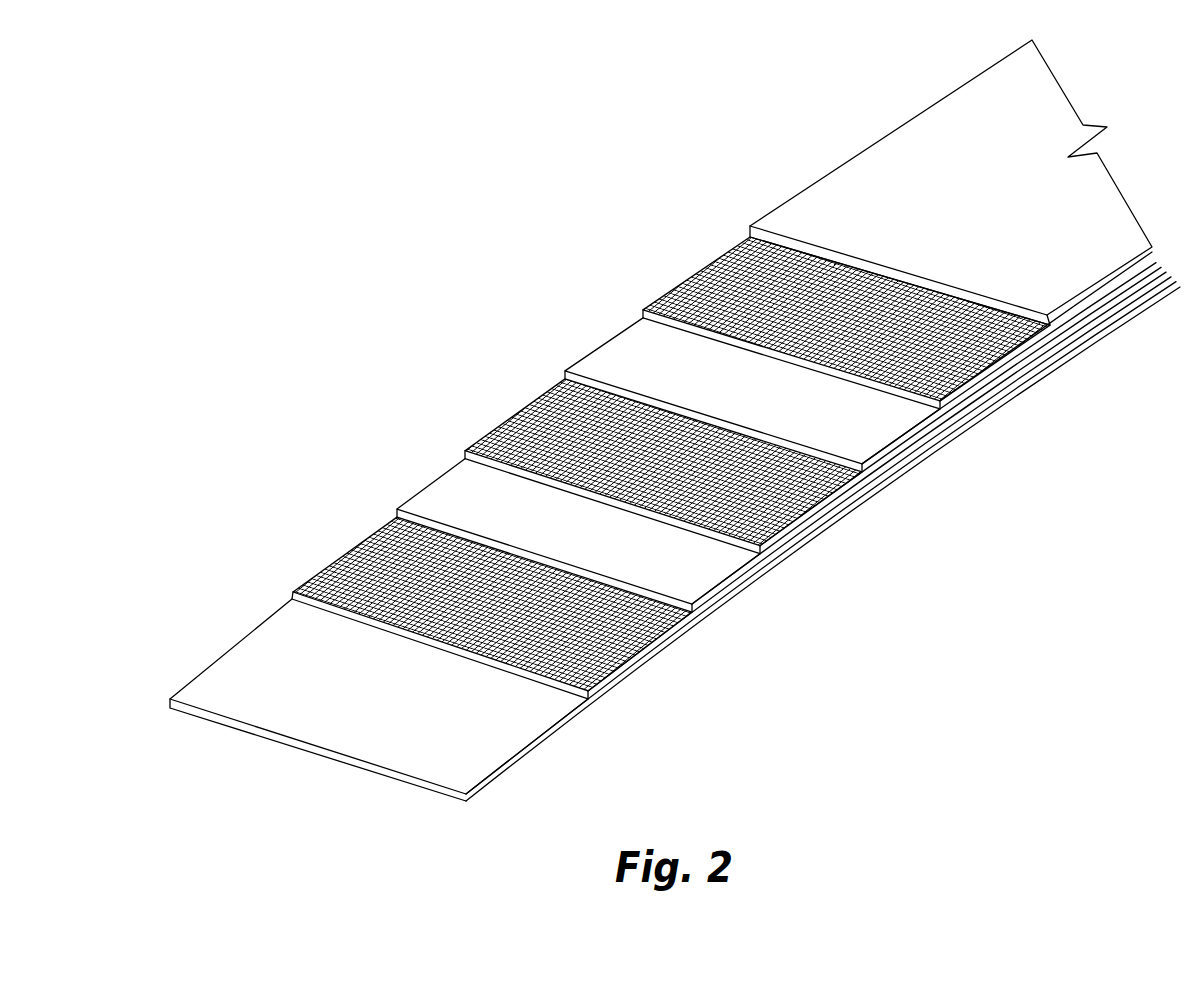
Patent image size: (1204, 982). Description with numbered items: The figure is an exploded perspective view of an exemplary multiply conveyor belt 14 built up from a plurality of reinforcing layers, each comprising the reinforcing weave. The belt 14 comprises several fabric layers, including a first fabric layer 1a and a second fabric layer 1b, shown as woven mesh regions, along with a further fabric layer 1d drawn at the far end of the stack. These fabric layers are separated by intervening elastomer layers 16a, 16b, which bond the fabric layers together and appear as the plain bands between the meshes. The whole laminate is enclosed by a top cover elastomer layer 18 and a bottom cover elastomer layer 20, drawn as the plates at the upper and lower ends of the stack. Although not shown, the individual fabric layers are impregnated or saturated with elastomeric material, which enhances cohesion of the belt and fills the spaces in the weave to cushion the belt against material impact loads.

The multiply conveyor belt 14 is at (311, 401).
The bottom cover elastomer layer 20 is at (512, 767).
The first fabric layer 1a is at (640, 655).
The intervening elastomer layer 16a is at (431, 484).
The second fabric layer 1b is at (793, 503).
The intervening elastomer layer 16b is at (598, 348).
The third mesh electrode layer 1d is at (1015, 357).
The top cover elastomer layer 18 is at (868, 146).